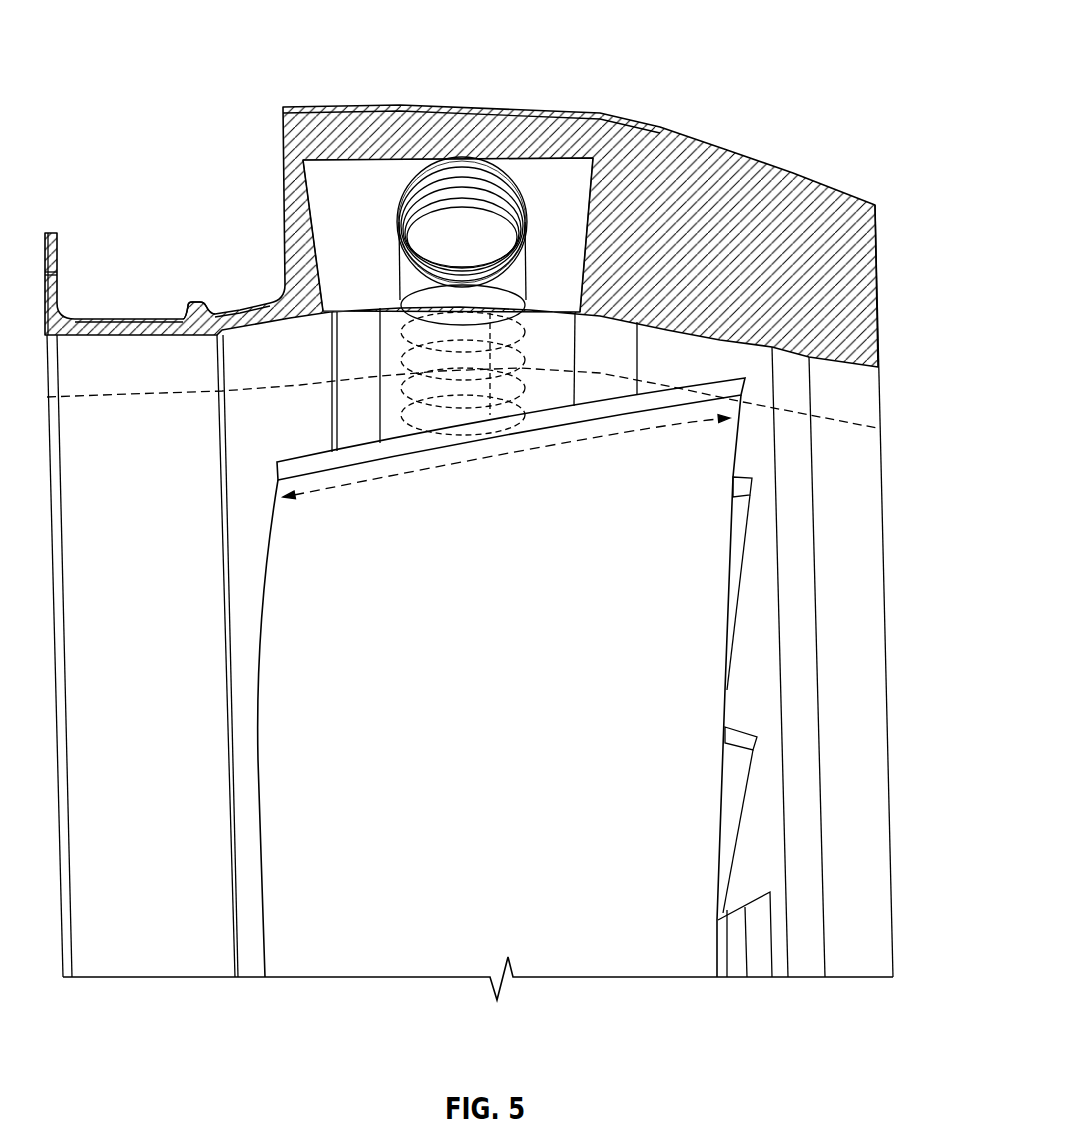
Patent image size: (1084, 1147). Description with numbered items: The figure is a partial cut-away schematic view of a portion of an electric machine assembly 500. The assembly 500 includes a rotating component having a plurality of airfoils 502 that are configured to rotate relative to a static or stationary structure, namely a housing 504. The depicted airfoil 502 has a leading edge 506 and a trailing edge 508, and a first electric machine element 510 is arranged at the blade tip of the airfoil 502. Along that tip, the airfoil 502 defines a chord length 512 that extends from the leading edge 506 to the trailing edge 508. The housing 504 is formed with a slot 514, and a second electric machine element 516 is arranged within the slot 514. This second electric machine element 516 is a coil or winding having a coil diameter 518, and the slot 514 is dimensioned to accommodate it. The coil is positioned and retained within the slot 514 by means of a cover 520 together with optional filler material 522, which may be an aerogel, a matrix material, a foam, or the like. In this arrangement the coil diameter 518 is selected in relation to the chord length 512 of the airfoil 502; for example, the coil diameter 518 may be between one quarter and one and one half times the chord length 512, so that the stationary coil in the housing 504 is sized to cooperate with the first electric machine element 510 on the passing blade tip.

The electric machine assembly 500 is at (755, 60).
The airfoil 502 is at (618, 930).
The housing 504 is at (780, 200).
The leading edge 506 is at (258, 778).
The trailing edge 508 is at (690, 722).
The first electric machine element 510 is at (562, 407).
The chord length 512 is at (452, 467).
The slot 514 is at (322, 204).
The second electric machine element 516 is at (440, 153).
The coil diameter 518 is at (455, 207).
The cover 520 is at (343, 338).
The filler material 522 is at (557, 177).